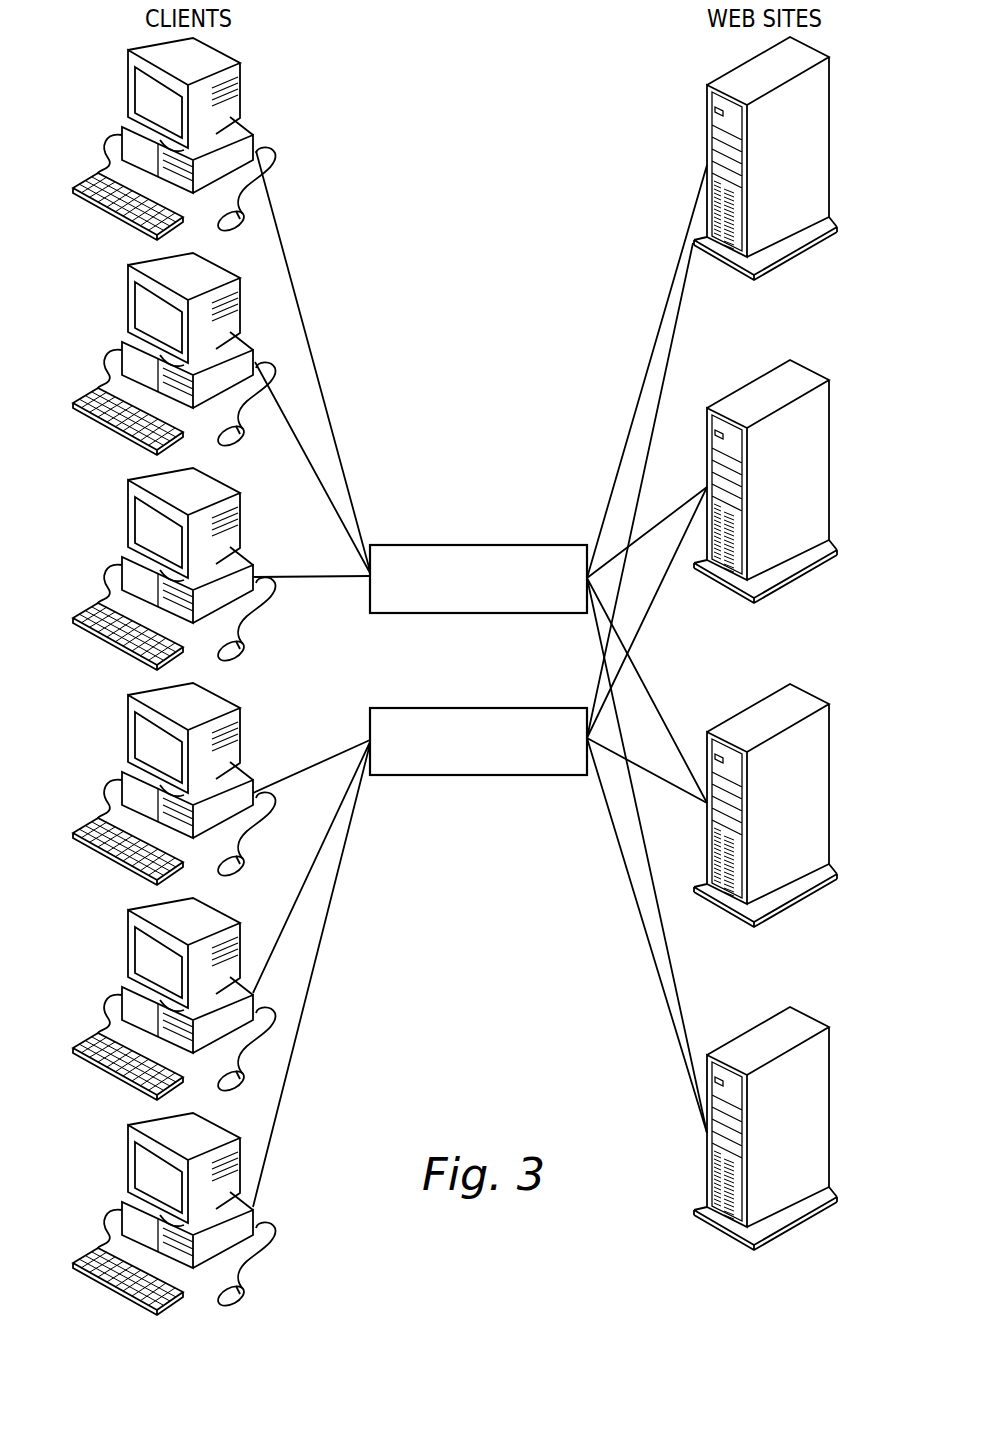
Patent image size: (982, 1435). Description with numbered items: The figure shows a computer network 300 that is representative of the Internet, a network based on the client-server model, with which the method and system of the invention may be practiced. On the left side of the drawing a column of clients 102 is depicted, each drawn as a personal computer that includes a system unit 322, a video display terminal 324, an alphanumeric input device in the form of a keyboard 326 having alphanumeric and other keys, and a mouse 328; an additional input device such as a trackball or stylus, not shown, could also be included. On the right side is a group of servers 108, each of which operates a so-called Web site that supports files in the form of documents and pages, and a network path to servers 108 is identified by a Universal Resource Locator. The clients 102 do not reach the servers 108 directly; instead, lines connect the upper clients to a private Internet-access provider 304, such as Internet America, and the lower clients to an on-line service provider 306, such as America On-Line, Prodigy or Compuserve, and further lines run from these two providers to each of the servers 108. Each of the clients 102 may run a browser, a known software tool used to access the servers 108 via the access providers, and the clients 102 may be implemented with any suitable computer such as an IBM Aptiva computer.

The client 102 is at (113, 77).
The server 108 is at (800, 643).
The computer network 300 is at (517, 97).
The Internet-access provider 304 is at (545, 544).
The on-line service provider 306 is at (545, 707).
The system unit 322 is at (248, 123).
The video display terminal 324 is at (230, 55).
The keyboard 326 is at (78, 197).
The mouse 328 is at (245, 222).